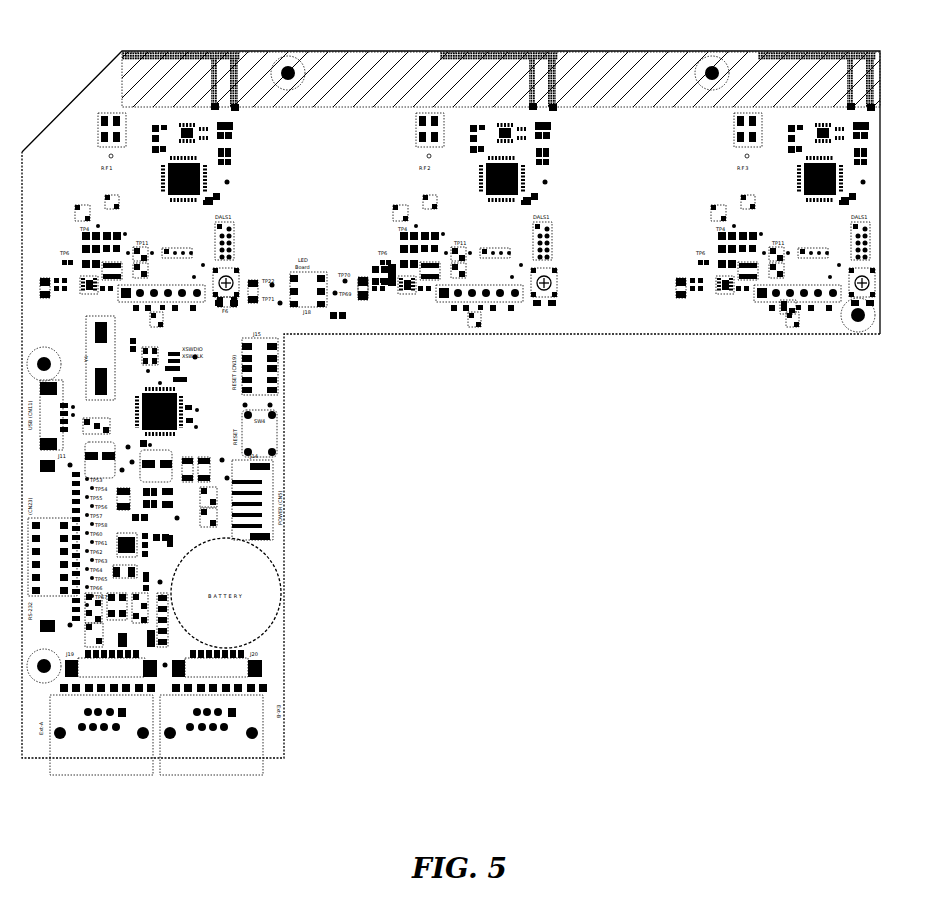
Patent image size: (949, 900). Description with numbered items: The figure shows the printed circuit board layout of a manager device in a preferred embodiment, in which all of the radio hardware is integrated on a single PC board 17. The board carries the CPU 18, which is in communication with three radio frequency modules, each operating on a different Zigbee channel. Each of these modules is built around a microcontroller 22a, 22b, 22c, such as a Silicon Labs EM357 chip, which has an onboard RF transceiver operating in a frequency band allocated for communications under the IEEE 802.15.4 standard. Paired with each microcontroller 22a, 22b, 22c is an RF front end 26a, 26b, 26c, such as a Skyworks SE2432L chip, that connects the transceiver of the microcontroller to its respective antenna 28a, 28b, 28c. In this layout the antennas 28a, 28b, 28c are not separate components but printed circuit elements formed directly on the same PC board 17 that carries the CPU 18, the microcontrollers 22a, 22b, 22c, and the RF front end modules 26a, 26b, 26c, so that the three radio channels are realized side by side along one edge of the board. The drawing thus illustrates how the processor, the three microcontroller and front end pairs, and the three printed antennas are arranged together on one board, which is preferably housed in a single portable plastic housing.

The PC board 17 is at (67, 107).
The CPU 18 is at (200, 395).
The microcontroller 22a is at (239, 161).
The microcontroller 22b is at (554, 161).
The microcontroller 22c is at (868, 161).
The RF front end 26a is at (239, 179).
The RF front end 26b is at (554, 179).
The RF front end 26c is at (868, 179).
The antenna 28a is at (193, 60).
The antenna 28b is at (504, 60).
The antenna 28c is at (817, 60).